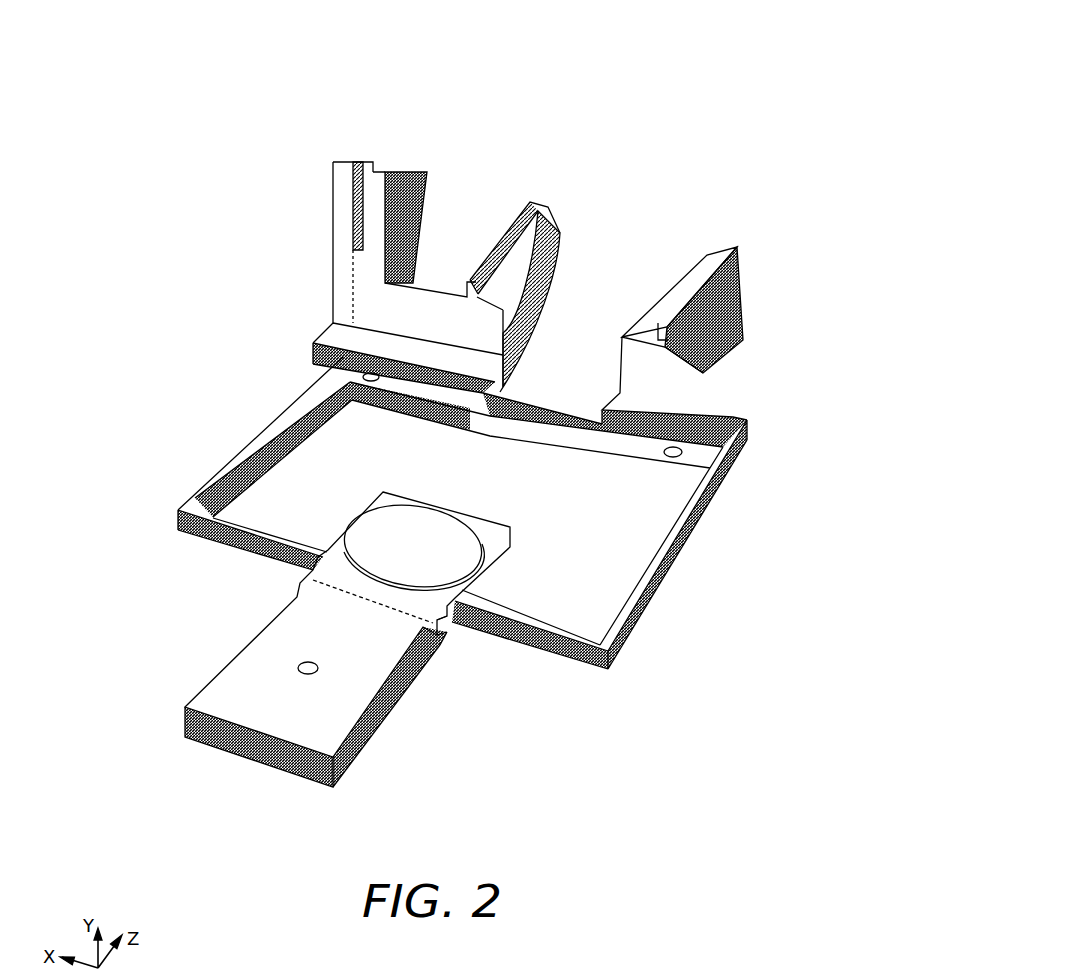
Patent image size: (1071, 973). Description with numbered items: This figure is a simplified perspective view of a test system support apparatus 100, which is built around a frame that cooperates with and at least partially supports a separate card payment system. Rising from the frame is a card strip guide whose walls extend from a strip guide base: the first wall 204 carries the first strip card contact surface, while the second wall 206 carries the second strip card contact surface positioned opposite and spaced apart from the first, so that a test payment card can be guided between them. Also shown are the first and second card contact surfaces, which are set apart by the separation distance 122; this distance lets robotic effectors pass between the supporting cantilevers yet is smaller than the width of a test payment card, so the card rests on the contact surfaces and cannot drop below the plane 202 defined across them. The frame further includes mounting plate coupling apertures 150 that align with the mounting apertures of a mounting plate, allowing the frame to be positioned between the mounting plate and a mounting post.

The support apparatus 100 is at (477, 400).
The second wall 206 is at (333, 188).
The first wall 204 is at (403, 195).
The plane 202 is at (567, 181).
The separation distance 122 is at (668, 289).
The mounting plate coupling apertures 150 is at (370, 381).